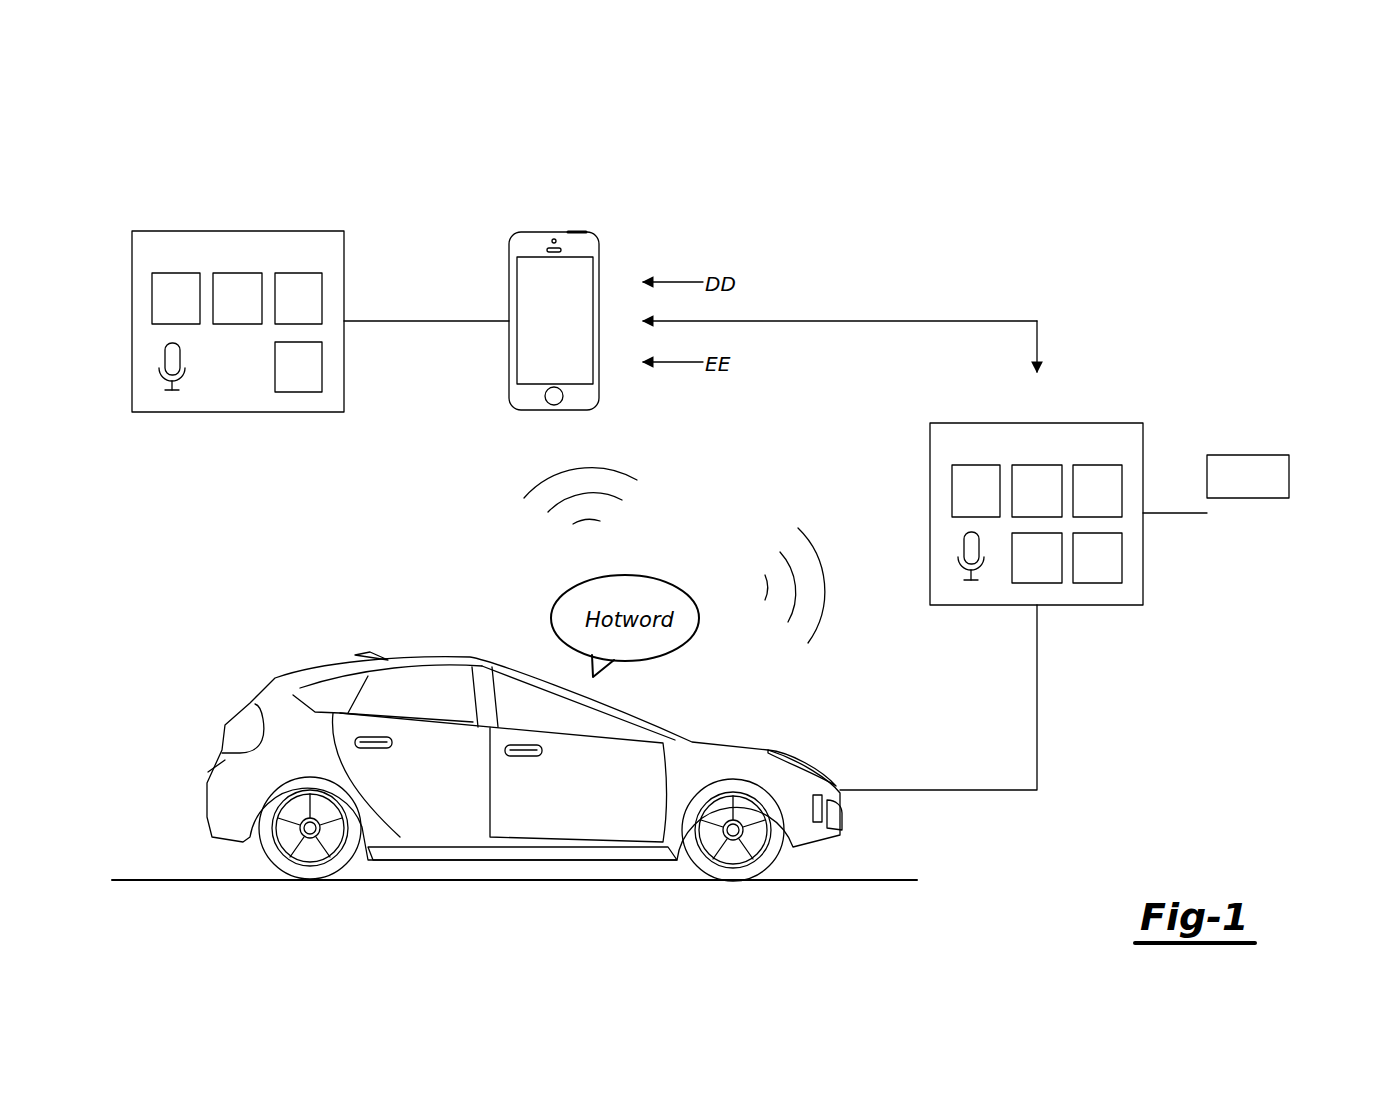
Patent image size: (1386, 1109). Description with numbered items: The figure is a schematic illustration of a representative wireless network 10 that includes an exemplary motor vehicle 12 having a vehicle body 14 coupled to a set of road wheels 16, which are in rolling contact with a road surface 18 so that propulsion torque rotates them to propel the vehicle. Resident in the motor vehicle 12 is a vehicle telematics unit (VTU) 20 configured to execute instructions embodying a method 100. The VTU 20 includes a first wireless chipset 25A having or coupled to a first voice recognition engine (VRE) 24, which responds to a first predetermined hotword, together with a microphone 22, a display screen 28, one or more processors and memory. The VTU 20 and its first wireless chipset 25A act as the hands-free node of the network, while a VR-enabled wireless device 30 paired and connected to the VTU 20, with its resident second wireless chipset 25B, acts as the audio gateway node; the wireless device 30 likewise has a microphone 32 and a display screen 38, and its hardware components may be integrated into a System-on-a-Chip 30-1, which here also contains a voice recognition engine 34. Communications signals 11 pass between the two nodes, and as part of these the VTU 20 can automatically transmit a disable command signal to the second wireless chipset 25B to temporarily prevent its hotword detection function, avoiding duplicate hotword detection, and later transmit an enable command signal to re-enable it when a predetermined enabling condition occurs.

The wireless network 10 is at (1068, 142).
The communications signals 11 is at (964, 321).
The motor vehicle 12 is at (303, 606).
The vehicle body 14 is at (270, 768).
The road wheels 16 is at (265, 850).
The road surface 18 is at (879, 912).
The vehicle telematics unit (VTU) 20 is at (1052, 499).
The microphone 22 is at (958, 553).
The first voice recognition engine (VRE) 24 is at (1122, 558).
The first wireless chipset 25A is at (1097, 491).
The second wireless chipset 25B is at (298, 298).
The display screen 28 is at (1289, 478).
The wireless device 30 is at (602, 289).
The System-on-a-Chip (SOC) 30-1 is at (265, 321).
The microphone 32 is at (160, 360).
The mobile device voice recognition engine 34 is at (322, 365).
The display screen 38 is at (567, 320).
The method 100 is at (1037, 558).